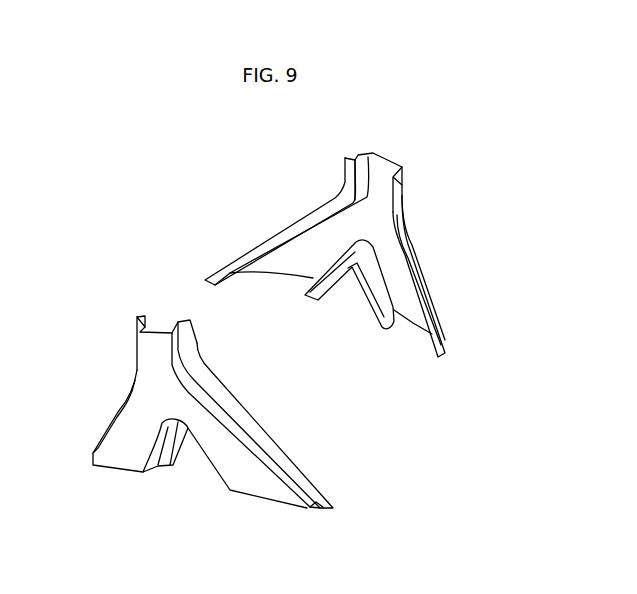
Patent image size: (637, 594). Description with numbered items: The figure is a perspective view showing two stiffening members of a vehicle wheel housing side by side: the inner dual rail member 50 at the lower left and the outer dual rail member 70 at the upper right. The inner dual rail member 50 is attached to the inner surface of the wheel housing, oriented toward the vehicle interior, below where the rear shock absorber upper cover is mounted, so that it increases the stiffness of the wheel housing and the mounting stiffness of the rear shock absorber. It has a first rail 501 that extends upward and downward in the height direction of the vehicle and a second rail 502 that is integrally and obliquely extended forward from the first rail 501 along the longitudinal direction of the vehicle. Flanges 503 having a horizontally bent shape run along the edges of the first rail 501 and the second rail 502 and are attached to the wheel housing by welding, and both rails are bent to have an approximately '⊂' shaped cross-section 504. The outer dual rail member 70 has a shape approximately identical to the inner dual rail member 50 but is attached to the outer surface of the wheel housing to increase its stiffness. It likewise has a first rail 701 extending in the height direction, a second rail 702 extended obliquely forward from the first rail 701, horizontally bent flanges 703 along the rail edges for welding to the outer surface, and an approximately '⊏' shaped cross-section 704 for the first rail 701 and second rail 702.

The outer dual rail member 70 is at (440, 218).
The first rail 701 is at (282, 273).
The second rail 702 is at (408, 322).
The flanges 703 is at (275, 238).
The cross-section 704 is at (386, 167).
The inner dual rail member 50 is at (94, 326).
The first rail 501 is at (117, 470).
The second rail 502 is at (260, 497).
The flanges 503 is at (105, 425).
The cross-section 504 is at (157, 320).